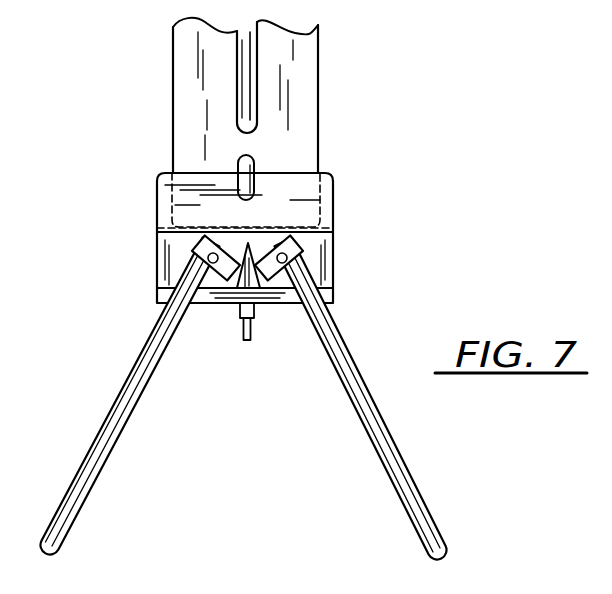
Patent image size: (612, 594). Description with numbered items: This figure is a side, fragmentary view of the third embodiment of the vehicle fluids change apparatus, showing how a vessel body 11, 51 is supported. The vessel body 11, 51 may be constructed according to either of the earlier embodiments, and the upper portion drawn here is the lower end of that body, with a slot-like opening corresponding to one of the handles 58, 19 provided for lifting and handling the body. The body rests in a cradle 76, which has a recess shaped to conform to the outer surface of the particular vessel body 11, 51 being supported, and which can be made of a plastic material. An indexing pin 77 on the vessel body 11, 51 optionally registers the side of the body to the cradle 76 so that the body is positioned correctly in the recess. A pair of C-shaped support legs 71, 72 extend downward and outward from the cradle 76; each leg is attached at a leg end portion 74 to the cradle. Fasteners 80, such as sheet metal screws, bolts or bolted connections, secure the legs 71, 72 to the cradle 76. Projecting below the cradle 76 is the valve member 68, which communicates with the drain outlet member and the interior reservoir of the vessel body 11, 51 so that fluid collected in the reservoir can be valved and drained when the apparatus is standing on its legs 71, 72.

The vessel body 11 is at (201, 95).
The vessel body 51 is at (186, 86).
The handle 58 is at (324, 77).
The handle 19 is at (252, 65).
The indexing pin 77 is at (256, 164).
The right cradle 76 is at (157, 212).
The right leg end portion 74 is at (160, 300).
The fastener 80 is at (200, 258).
The C-shaped support leg 71 is at (103, 451).
The C-shaped support leg 72 is at (398, 484).
The valve member 68 is at (244, 325).